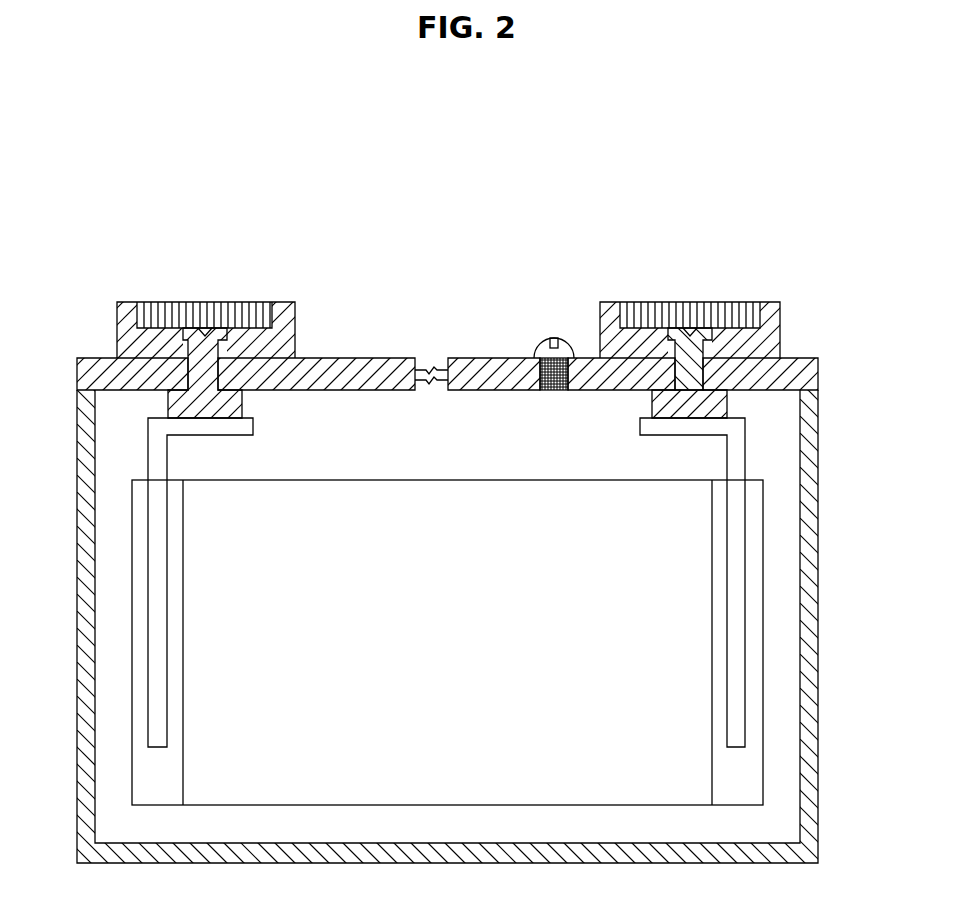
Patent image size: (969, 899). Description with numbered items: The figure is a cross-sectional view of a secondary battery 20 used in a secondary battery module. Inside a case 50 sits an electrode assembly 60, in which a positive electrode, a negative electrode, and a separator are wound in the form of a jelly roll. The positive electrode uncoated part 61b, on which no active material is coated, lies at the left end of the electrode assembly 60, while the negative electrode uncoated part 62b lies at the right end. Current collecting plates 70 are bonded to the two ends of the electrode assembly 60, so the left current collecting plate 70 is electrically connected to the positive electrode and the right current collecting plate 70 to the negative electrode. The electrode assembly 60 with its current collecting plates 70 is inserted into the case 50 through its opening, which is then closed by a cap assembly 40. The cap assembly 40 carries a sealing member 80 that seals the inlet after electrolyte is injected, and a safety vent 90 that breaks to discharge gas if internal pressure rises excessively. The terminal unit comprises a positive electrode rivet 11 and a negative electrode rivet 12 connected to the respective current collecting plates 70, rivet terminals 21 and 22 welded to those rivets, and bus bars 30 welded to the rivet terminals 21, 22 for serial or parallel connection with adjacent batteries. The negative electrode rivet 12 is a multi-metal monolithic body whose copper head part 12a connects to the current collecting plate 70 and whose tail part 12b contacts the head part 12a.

The secondary battery 20 is at (737, 176).
The case 50 is at (810, 602).
The cap assembly 40 is at (806, 364).
The safety vent 90 is at (434, 358).
The sealing member 80 is at (553, 338).
The rivet terminal 21 is at (128, 303).
The rivet terminal 22 is at (771, 303).
The bus bar 30 is at (201, 303).
The positive electrode rivet 11 is at (229, 338).
The negative electrode rivet 12 is at (484, 449).
The head part 12a is at (733, 404).
The tail part 12b is at (700, 330).
The current collecting plate 70 is at (160, 453).
The electrode assembly 60 is at (459, 652).
The positive electrode uncoated part 61b is at (175, 781).
The negative electrode uncoated part 62b is at (755, 781).